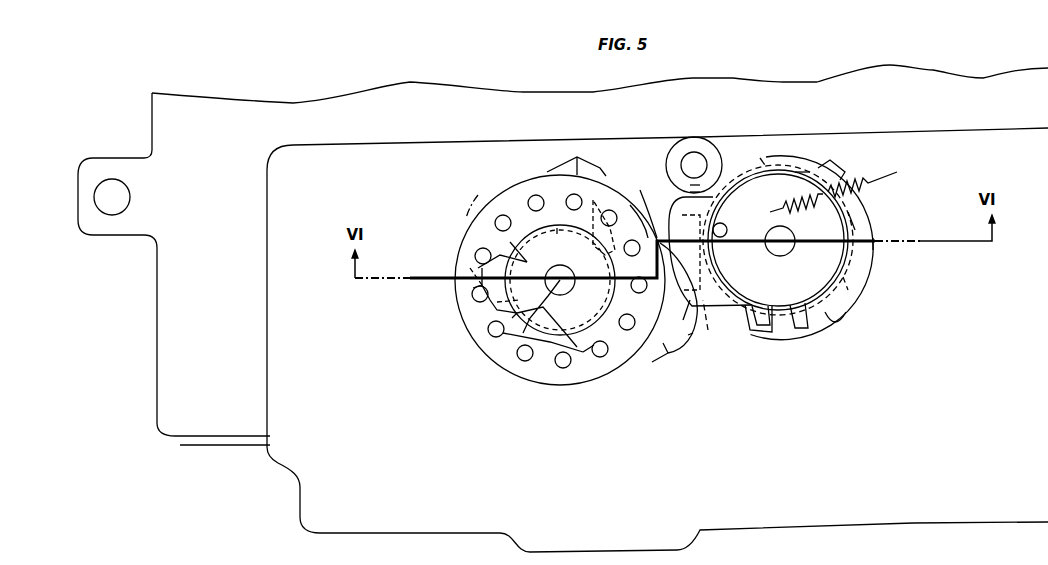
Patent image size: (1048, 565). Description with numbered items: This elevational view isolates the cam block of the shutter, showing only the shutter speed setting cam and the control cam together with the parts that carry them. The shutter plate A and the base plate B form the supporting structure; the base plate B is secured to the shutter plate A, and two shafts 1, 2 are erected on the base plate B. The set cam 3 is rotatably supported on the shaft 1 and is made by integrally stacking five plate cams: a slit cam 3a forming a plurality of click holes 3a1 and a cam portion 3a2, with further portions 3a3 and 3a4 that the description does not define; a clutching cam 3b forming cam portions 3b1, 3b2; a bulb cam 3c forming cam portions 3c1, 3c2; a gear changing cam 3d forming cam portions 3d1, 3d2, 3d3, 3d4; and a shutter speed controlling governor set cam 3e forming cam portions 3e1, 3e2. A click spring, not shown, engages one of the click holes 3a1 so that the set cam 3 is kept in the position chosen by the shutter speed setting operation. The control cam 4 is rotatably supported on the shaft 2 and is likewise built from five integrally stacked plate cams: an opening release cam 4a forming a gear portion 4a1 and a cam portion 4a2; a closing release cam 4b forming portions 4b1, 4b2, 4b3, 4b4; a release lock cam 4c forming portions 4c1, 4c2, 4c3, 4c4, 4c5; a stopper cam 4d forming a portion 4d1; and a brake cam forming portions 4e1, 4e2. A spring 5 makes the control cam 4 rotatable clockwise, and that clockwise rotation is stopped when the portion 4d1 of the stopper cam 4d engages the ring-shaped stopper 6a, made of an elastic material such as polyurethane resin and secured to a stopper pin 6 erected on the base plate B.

The shutter plate A is at (212, 402).
The base plate B is at (317, 475).
The shaft 1 is at (490, 333).
The shaft 2 is at (795, 237).
The set cam 3 is at (503, 462).
The slit cam 3a is at (523, 198).
The click holes 3a1 is at (537, 195).
The cam portion 3a2 is at (638, 218).
The hole 3a3 is at (616, 190).
The projection 3a4 is at (577, 158).
The clutching cam 3b is at (560, 345).
The cam portion 3b1 is at (570, 357).
The cam portion 3b2 is at (557, 228).
The bulb cam 3c is at (470, 268).
The cam portion 3c1 is at (592, 222).
The cam portion 3c2 is at (497, 302).
The gear changing cam 3d is at (473, 288).
The cam portion 3d1 is at (512, 318).
The cam portion 3d2 is at (594, 345).
The cam portion 3d3 is at (537, 357).
The cam portion 3d4 is at (510, 242).
The shutter speed controlling governor set cam 3e is at (663, 343).
The cam portion 3e1 is at (478, 195).
The cam portion 3e2 is at (688, 335).
The control cam 4 is at (845, 462).
The opening release cam 4a is at (828, 170).
The gear portion 4a1 is at (843, 277).
The cam portion 4a2 is at (802, 170).
The closing release cam 4b is at (838, 183).
The portion 4b1 is at (840, 317).
The portion 4b2 is at (798, 327).
The portion 4b3 is at (755, 325).
The portion 4b4 is at (742, 175).
The release lock cam 4c is at (862, 262).
The portion 4c1 is at (708, 330).
The portion 4c2 is at (768, 330).
The portion 4c3 is at (873, 238).
The portion 4c4 is at (860, 165).
The portion 4c5 is at (760, 158).
The stopper cam 4d is at (848, 212).
The portion 4d1 is at (690, 192).
The portion 4e1 is at (696, 185).
The portion 4e2 is at (683, 320).
The spring 5 is at (890, 170).
The stopper pin 6 is at (714, 158).
The ring-shaped stopper 6a is at (713, 162).